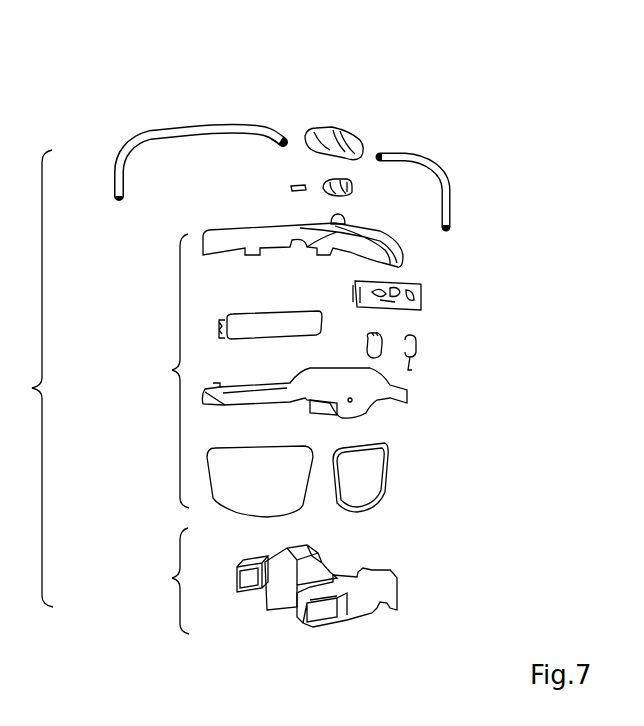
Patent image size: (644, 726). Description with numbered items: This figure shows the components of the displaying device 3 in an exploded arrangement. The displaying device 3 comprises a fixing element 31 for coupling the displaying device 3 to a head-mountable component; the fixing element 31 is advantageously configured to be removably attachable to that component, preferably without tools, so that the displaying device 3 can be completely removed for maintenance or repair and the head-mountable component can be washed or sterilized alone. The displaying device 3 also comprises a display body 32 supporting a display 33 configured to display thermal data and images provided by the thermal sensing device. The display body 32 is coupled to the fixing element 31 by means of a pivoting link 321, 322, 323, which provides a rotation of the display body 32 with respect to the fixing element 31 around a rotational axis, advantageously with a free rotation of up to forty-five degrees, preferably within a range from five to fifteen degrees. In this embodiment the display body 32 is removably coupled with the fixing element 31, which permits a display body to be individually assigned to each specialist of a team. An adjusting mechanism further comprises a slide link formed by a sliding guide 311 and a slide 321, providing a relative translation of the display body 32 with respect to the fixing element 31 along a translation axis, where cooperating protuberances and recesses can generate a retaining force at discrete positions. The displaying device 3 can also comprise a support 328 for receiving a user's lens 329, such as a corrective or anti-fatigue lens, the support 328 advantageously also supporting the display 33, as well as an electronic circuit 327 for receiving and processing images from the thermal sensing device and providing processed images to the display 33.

The displaying device 3 is at (32, 378).
The fixing element 31 is at (113, 186).
The sliding guide 311 is at (365, 139).
The slide 321 is at (358, 186).
The pivoting link component 322 is at (342, 222).
The pivoting link component 323 is at (288, 188).
The display body 32 is at (276, 365).
The electronic circuit 327 is at (397, 300).
The support 328 is at (405, 392).
The user's lens 329 is at (375, 490).
The display 33 is at (266, 581).